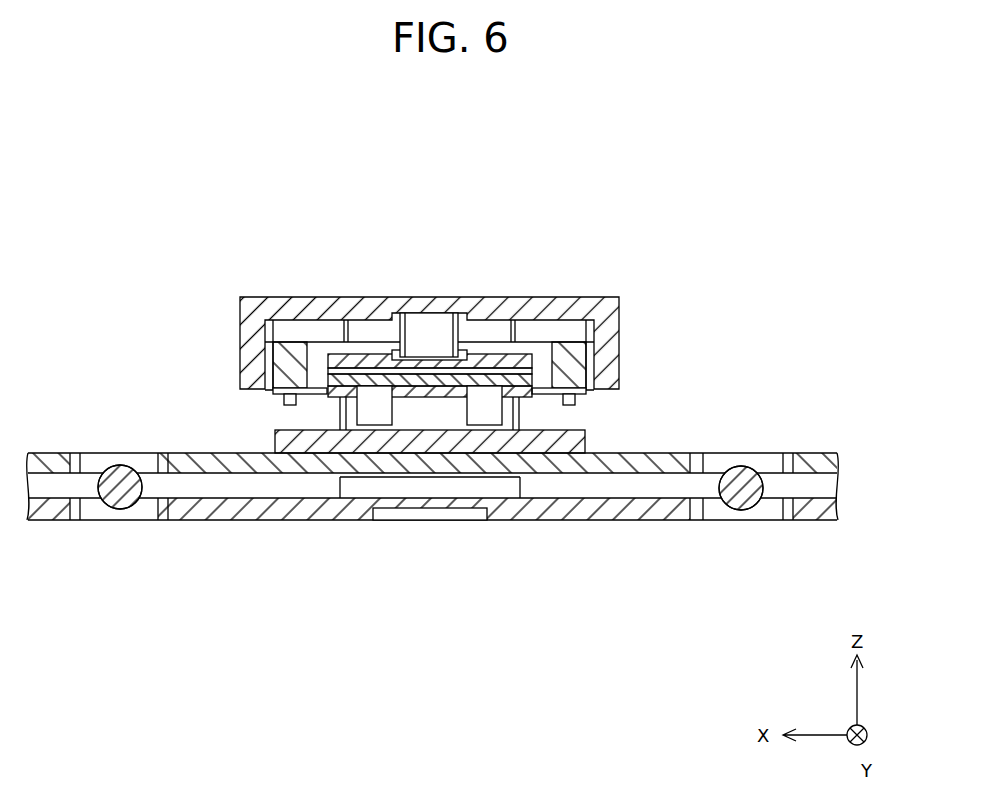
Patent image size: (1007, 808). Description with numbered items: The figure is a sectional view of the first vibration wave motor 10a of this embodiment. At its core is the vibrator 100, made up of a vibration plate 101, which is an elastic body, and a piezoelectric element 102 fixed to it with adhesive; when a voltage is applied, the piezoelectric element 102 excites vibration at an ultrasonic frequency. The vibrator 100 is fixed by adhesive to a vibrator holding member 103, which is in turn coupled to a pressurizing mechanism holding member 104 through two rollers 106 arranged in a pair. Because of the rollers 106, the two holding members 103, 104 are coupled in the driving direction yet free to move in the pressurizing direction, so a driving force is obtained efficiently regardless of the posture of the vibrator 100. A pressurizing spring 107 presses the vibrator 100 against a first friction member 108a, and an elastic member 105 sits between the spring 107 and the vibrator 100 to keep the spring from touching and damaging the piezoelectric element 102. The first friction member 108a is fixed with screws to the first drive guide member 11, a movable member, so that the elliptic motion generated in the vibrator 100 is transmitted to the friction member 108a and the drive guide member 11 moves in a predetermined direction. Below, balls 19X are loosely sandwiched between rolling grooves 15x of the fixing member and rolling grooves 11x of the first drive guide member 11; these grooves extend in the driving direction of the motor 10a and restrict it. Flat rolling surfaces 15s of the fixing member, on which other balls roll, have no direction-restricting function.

The first vibration wave motor 10a is at (832, 182).
The first drive guide member 11 is at (603, 453).
The rolling grooves 11x is at (87, 470).
The rolling grooves 15x is at (153, 503).
The rolling surfaces 15s is at (448, 512).
The balls 19X is at (123, 500).
The vibrator 100 is at (308, 399).
The vibration plate 101 is at (340, 416).
The piezoelectric element 102 is at (327, 380).
The vibrator holding member 103 is at (268, 338).
The pressurizing mechanism holding member 104 is at (242, 312).
The elastic member 105 is at (497, 353).
The rollers 106 is at (280, 362).
The pressurizing spring 107 is at (402, 330).
The first friction member 108a is at (587, 433).